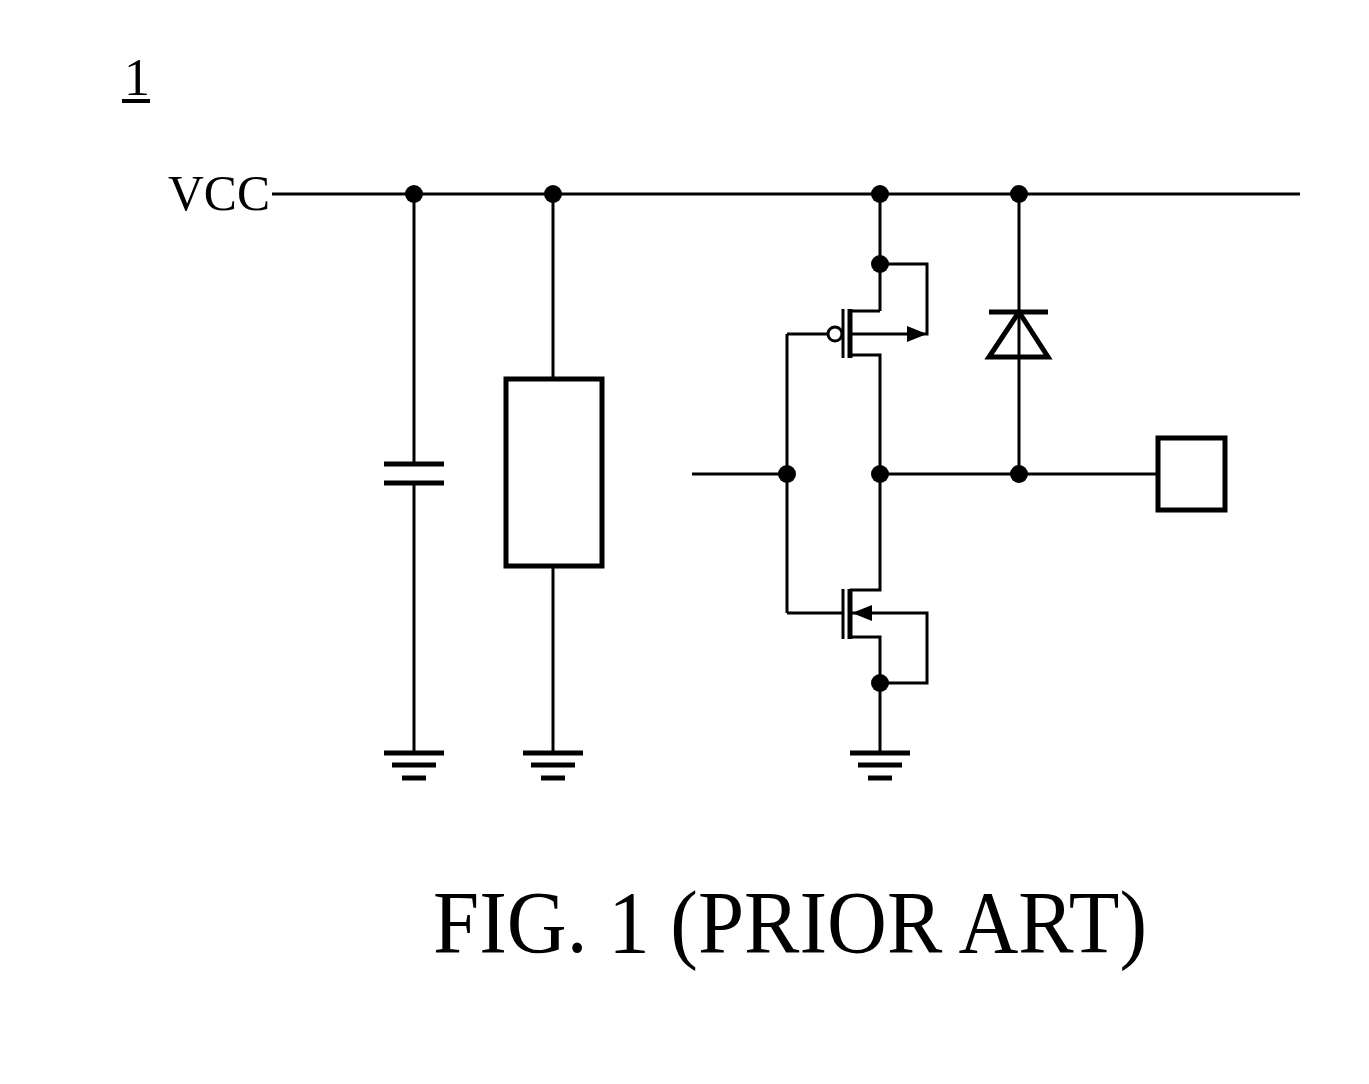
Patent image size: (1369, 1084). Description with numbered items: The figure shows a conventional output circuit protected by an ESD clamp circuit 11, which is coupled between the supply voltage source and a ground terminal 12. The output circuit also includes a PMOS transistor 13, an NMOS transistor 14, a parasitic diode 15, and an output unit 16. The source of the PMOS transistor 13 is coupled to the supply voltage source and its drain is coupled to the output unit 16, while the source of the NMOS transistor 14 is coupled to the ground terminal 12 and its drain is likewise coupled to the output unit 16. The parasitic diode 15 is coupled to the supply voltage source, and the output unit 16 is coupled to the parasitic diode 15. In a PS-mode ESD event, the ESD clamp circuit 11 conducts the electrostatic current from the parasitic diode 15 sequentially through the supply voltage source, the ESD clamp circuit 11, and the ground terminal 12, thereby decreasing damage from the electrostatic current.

The ESD clamp circuit 11 is at (575, 378).
The ground terminal 12 is at (414, 780).
The PMOS transistor 13 is at (862, 308).
The NMOS transistor 14 is at (862, 640).
The parasitic diode 15 is at (1035, 310).
The output unit 16 is at (1192, 438).